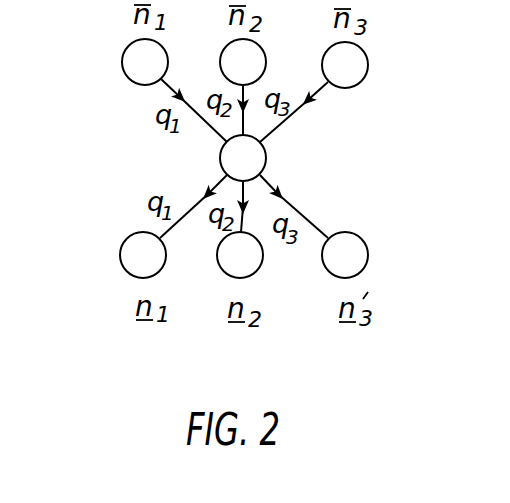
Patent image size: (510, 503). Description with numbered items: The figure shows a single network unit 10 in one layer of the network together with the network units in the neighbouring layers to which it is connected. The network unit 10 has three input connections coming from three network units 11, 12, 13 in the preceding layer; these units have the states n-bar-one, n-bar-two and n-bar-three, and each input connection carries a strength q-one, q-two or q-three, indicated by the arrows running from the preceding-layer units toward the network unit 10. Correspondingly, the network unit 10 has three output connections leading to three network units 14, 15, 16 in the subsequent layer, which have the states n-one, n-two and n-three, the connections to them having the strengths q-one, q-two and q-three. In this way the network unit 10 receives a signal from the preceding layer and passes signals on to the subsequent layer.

The network unit 10 is at (265, 156).
The network unit in the preceding layer 11 is at (122, 56).
The network unit in the preceding layer 12 is at (262, 50).
The network unit in the preceding layer 13 is at (368, 64).
The network unit in the subsequent layer 14 is at (120, 248).
The network unit in the subsequent layer 15 is at (256, 271).
The network unit in the subsequent layer 16 is at (368, 254).